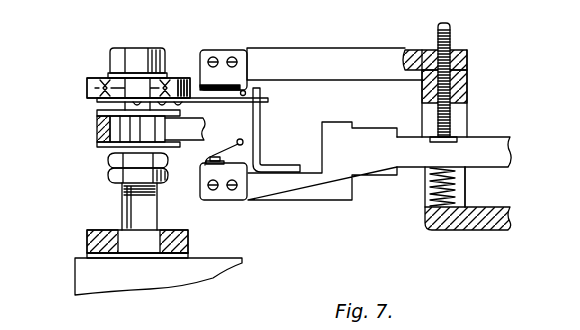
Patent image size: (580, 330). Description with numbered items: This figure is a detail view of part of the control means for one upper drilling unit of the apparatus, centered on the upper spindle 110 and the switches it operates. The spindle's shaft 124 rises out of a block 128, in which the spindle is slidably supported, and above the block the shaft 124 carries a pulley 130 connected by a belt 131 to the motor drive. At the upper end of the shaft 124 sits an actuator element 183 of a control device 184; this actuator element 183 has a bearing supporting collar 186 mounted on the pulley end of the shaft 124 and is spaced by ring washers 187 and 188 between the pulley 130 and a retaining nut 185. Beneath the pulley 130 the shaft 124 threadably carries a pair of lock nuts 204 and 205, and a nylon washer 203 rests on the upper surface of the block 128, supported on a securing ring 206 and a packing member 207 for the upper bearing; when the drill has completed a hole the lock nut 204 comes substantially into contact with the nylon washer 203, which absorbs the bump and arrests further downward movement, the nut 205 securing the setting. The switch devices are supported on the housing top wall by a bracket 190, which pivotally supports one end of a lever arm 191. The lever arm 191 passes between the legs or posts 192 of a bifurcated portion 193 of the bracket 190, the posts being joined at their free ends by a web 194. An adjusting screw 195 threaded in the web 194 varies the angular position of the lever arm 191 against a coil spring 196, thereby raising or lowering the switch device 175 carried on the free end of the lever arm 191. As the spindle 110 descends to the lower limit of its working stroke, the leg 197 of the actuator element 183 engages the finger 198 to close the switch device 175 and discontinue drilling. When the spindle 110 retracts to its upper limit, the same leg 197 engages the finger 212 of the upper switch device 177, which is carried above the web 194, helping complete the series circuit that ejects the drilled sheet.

The upper spindle 110 is at (118, 200).
The shaft 124 is at (128, 215).
The block 128 is at (84, 278).
The pulley 130 is at (97, 146).
The belt 131 is at (97, 126).
The switch device 175 is at (228, 192).
The switch device 177 is at (218, 72).
The actuator element 183 is at (90, 88).
The control device 184 is at (84, 97).
The retaining nut 185 is at (118, 58).
The bearing supporting collar 186 is at (176, 77).
The ring washer 187 is at (112, 76).
The ring washer 188 is at (98, 113).
The bracket 190 is at (435, 220).
The lever arm 191 is at (490, 153).
The legs or posts 192 is at (463, 192).
The bifurcated portion 193 is at (468, 120).
The web 194 is at (458, 90).
The adjusting screw 195 is at (453, 40).
The coil spring 196 is at (435, 185).
The leg 197 is at (247, 98).
The finger 198 is at (243, 142).
The nylon washer 203 is at (88, 238).
The lock nut 204 is at (165, 184).
The lock nut 205 is at (110, 161).
The securing ring 206 is at (130, 258).
The packing member 207 is at (161, 258).
The finger 212 is at (244, 91).